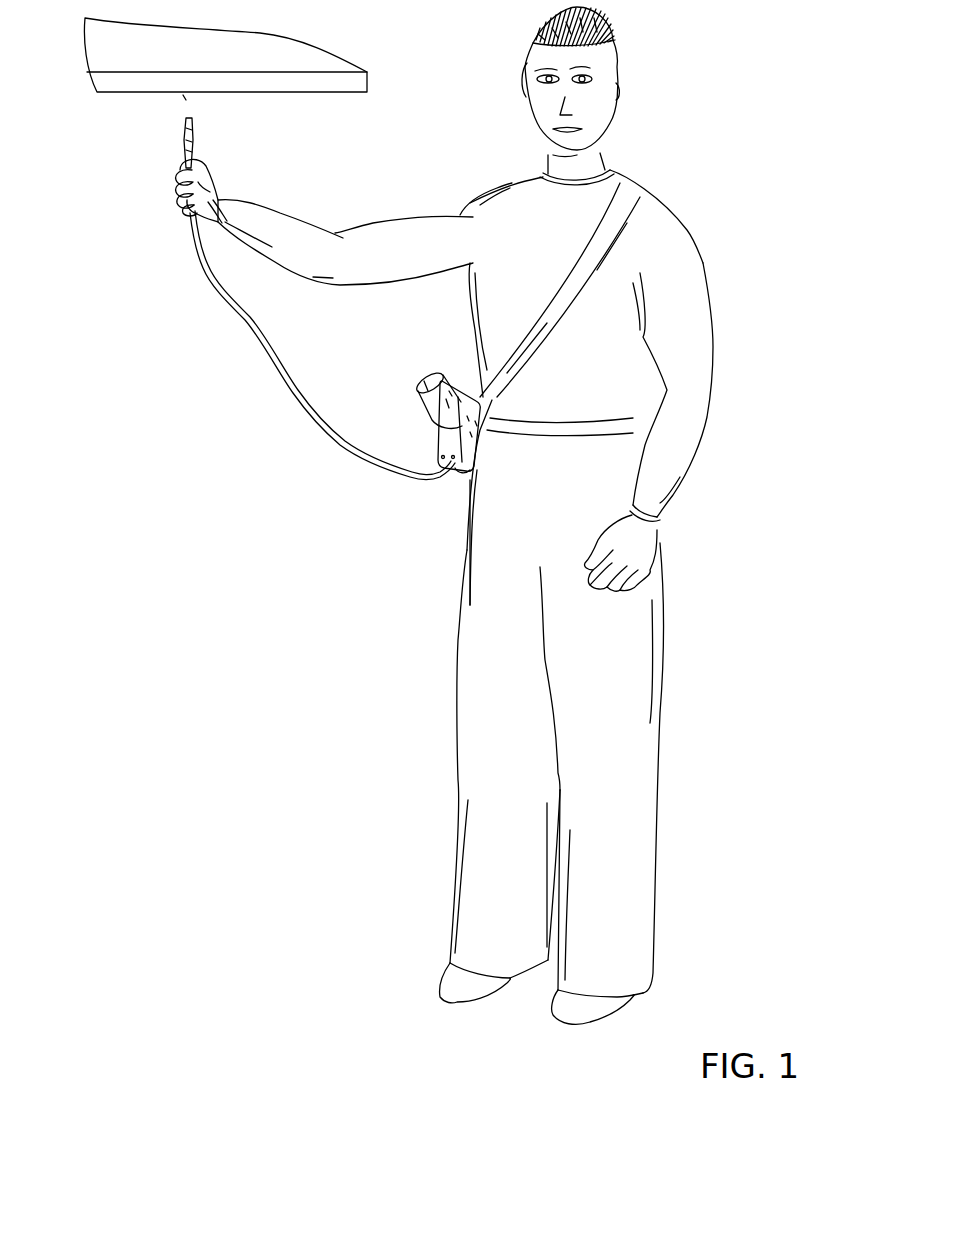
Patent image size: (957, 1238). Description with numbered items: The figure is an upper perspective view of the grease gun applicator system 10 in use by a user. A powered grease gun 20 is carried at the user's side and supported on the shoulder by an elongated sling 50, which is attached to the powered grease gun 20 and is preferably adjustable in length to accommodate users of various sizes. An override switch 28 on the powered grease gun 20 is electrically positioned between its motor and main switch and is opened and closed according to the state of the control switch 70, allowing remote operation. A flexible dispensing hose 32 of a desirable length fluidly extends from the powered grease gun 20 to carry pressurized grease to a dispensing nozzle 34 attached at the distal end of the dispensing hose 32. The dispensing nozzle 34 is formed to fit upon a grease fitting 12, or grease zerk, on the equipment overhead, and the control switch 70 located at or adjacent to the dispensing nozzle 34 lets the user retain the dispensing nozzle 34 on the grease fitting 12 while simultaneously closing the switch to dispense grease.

The grease gun applicator system 10 is at (308, 582).
The grease fitting 12 is at (183, 95).
The powered grease gun 20 is at (428, 433).
The override switch 28 is at (446, 375).
The dispensing hose 32 is at (248, 348).
The dispensing nozzle 34 is at (193, 117).
The elongated sling 50 is at (633, 193).
The control switch 70 is at (186, 151).